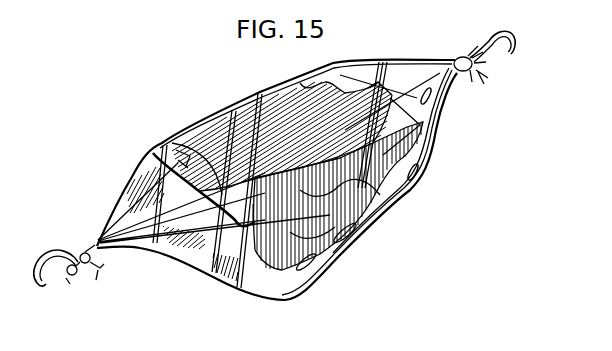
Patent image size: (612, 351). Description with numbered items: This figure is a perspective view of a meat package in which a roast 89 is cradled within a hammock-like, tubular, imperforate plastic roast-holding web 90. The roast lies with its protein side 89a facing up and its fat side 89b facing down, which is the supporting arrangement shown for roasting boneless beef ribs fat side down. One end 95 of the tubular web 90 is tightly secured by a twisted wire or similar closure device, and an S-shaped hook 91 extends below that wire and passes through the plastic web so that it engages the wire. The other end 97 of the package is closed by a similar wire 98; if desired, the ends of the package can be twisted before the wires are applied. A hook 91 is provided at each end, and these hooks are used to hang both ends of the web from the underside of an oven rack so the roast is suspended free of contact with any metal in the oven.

The roast 89 is at (413, 182).
The protein side 89a is at (223, 114).
The fat side 89b is at (358, 238).
The roast-holding web 90 is at (122, 181).
The hook 91 is at (53, 251).
The end of the tubular web 95 is at (66, 286).
The other end of the package 97 is at (469, 47).
The wire 98 is at (478, 85).